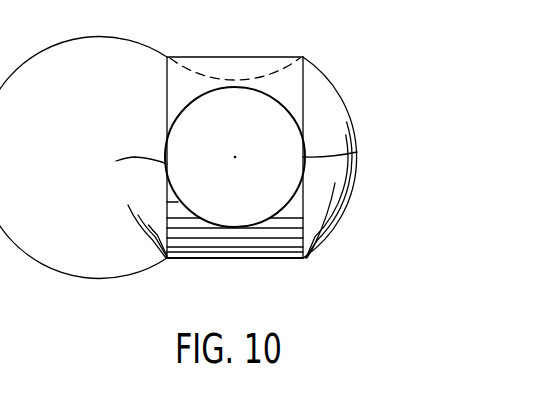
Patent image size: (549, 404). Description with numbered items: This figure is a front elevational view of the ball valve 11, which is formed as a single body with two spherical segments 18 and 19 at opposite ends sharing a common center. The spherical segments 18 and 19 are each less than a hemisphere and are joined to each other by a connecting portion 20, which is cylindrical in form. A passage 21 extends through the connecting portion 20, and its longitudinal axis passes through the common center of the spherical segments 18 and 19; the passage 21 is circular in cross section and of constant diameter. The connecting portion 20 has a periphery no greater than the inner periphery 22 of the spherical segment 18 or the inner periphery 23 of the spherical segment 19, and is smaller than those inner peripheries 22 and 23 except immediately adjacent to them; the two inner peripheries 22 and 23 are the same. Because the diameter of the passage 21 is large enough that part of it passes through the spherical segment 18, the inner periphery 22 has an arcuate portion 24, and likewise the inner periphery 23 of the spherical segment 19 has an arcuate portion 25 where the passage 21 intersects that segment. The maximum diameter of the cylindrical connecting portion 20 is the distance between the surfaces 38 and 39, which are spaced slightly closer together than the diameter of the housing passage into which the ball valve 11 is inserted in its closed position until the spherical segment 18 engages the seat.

The ball valve 11 is at (368, 70).
The spherical segment 18 is at (353, 131).
The spherical segment 19 is at (121, 117).
The connecting portion 20 is at (200, 242).
The passage 21 is at (289, 214).
The inner periphery 22 is at (298, 227).
The inner periphery 23 is at (167, 228).
The arcuate portion 24 is at (357, 152).
The arcuate portion 25 is at (116, 161).
The surface 38 is at (230, 248).
The surface 39 is at (273, 56).